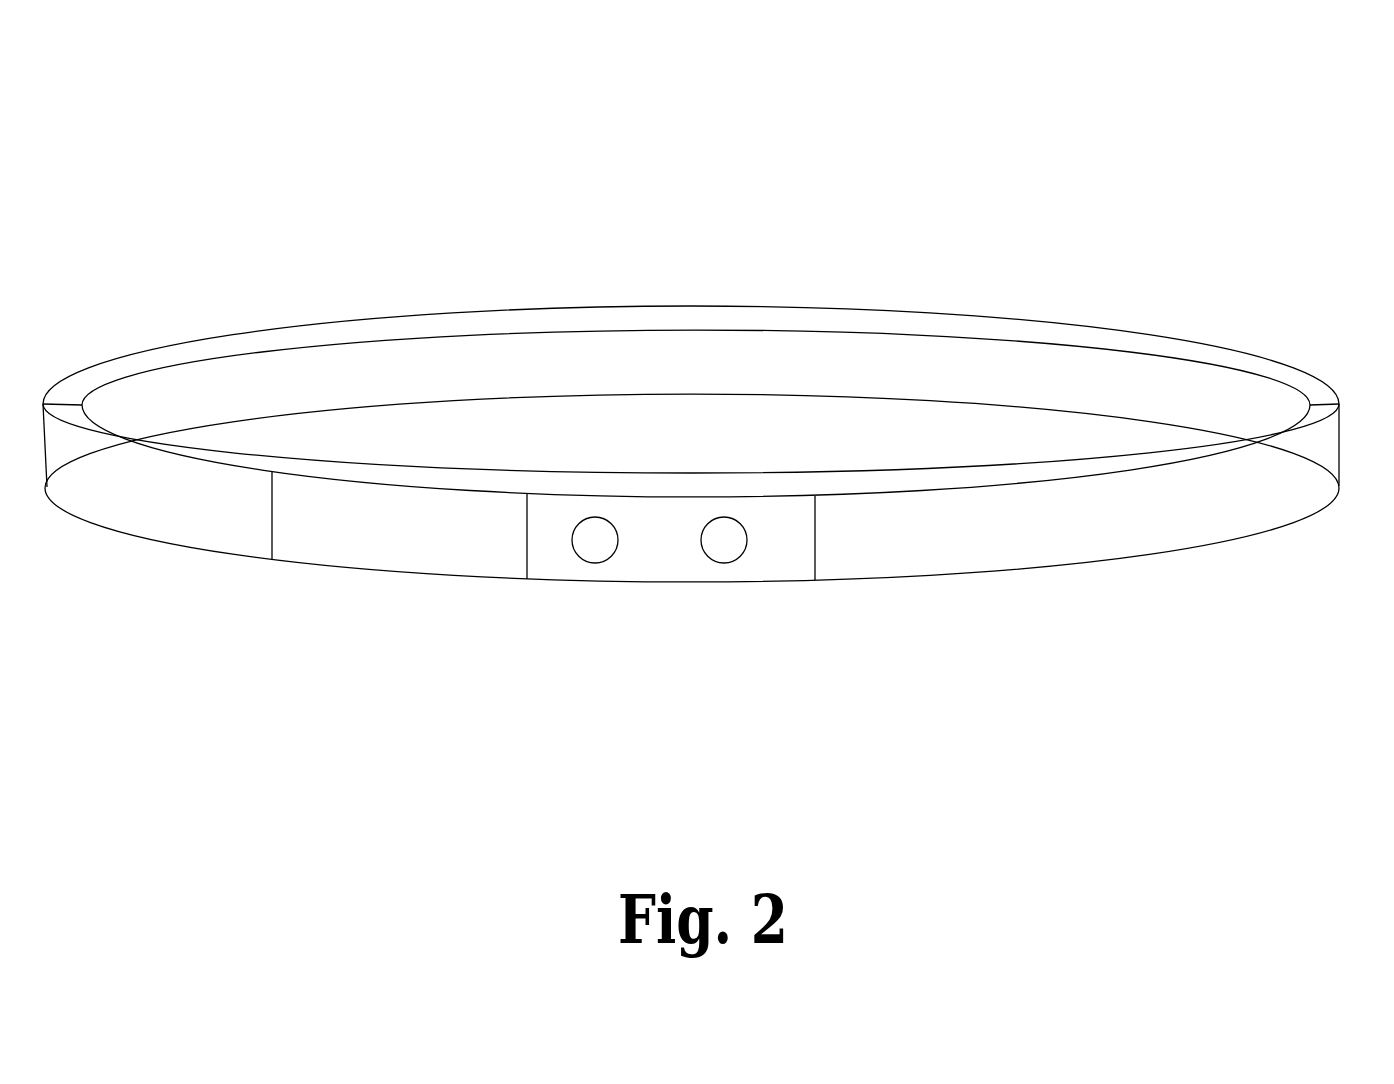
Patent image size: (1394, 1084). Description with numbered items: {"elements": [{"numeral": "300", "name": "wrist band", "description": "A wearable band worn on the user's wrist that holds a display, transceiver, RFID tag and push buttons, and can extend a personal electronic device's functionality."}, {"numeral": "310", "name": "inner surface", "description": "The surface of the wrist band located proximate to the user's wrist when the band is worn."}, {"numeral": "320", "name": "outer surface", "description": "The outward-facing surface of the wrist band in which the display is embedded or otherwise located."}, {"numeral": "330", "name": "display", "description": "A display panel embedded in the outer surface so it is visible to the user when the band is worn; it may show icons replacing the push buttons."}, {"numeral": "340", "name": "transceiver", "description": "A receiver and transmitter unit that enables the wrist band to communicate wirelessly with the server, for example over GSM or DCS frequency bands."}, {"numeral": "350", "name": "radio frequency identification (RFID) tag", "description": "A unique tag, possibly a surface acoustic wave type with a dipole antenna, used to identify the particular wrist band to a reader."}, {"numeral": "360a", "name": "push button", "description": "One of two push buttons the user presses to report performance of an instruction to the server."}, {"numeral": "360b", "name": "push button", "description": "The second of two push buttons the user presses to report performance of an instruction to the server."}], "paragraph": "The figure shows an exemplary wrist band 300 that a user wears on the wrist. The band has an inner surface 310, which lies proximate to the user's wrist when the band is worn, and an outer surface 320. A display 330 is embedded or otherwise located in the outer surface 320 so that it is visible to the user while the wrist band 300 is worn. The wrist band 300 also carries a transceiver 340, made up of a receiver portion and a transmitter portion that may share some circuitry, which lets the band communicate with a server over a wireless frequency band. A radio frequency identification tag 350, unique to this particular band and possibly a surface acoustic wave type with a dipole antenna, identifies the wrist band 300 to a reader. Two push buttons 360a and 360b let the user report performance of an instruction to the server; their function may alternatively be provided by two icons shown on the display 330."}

The wearable band device 300 is at (1033, 200).
The band body 310 is at (920, 367).
The band end edge 320 is at (1330, 387).
The display 330 is at (1027, 573).
The transceiver 340 is at (392, 568).
The RFID module 350 is at (92, 525).
The button 360a is at (613, 555).
The button 360b is at (707, 556).